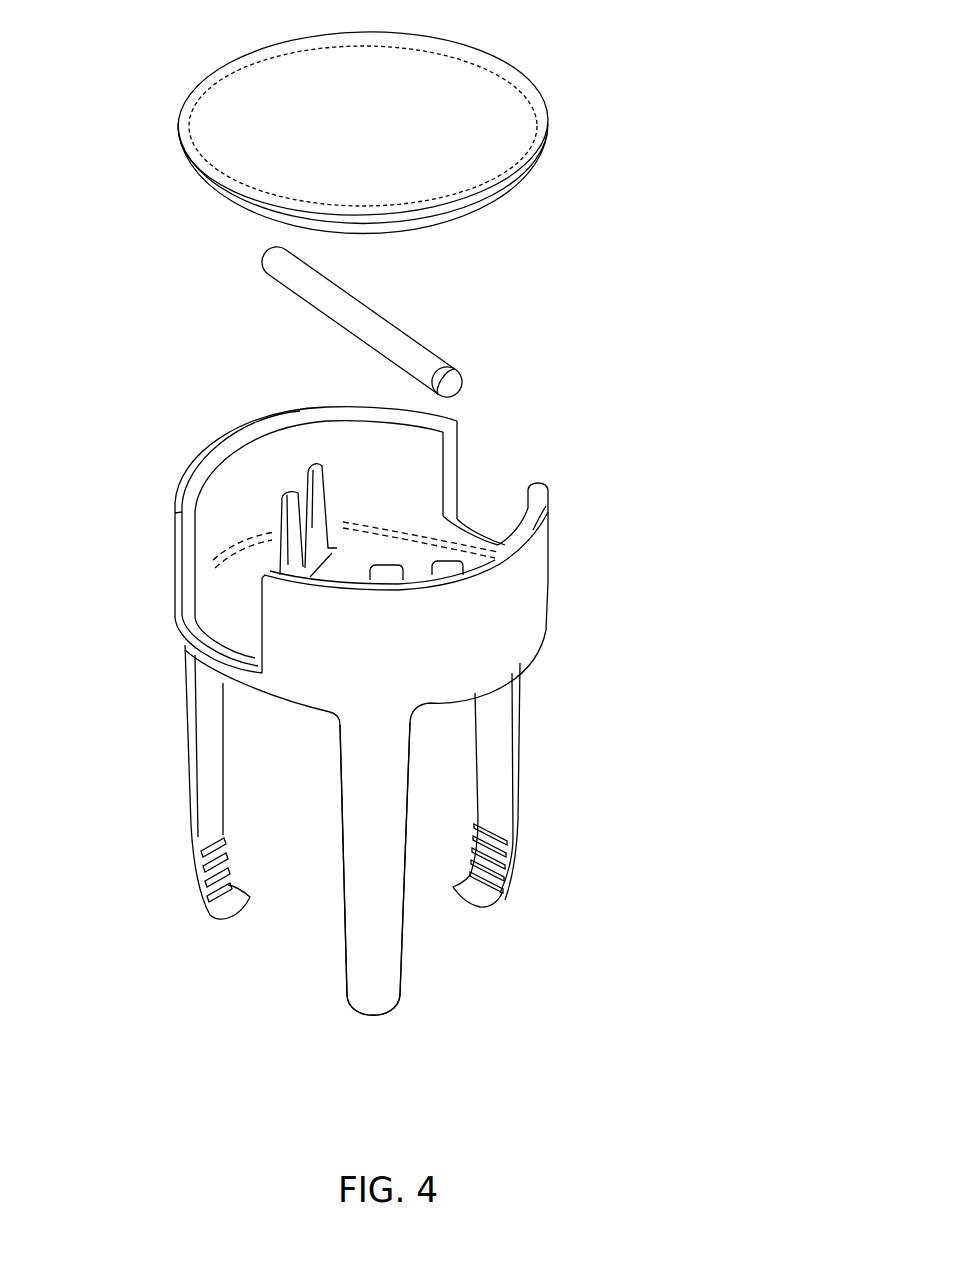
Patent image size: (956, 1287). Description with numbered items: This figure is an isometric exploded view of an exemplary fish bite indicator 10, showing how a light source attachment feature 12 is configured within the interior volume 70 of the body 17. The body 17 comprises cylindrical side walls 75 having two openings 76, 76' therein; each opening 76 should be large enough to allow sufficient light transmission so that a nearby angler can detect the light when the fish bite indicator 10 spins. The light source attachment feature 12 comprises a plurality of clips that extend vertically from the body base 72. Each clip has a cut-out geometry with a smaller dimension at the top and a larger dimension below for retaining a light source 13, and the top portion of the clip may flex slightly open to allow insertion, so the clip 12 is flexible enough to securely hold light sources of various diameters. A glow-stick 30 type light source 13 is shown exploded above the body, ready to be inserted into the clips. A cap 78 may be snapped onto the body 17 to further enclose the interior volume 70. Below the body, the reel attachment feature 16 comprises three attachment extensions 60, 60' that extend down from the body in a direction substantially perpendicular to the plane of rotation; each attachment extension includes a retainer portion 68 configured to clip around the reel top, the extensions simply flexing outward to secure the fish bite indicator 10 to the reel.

The fish bite indicator 10 is at (144, 317).
The light source attachment feature 12 is at (313, 467).
The light source 13 is at (432, 363).
The reel attachment feature 16 is at (203, 698).
The body 17 is at (492, 643).
The glow-stick 30 is at (388, 337).
The attachment extension 60 is at (149, 846).
The attachment extension 60' is at (554, 781).
The retainer portion 68 is at (502, 897).
The interior volume 70 is at (240, 480).
The body base 72 is at (237, 598).
The cylindrical side walls 75 is at (525, 581).
The opening 76 is at (161, 588).
The opening 76' is at (547, 495).
The cap 78 is at (510, 128).